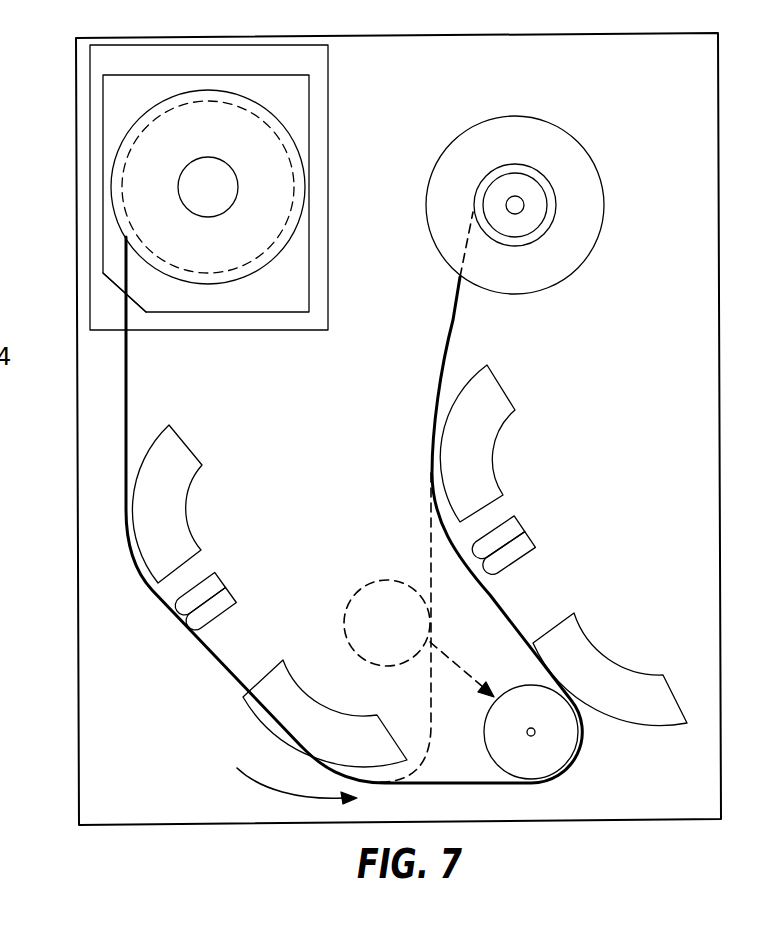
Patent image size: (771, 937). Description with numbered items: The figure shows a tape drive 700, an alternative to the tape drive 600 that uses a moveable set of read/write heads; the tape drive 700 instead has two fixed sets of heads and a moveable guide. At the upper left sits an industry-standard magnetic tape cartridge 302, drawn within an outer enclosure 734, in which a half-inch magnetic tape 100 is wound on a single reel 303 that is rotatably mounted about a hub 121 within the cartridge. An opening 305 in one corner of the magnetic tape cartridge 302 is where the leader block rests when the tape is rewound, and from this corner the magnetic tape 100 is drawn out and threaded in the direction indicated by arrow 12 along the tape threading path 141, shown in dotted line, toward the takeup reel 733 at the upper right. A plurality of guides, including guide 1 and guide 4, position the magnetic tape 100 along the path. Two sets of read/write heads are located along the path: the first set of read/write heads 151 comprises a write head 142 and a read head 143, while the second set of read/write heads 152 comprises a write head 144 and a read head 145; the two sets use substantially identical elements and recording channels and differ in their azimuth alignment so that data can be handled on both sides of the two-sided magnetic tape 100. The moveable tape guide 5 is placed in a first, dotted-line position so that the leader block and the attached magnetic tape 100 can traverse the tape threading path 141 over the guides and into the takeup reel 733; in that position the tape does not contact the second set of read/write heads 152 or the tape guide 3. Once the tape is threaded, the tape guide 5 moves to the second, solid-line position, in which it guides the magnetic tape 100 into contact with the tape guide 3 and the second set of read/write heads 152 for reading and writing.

The tape drive 700 is at (718, 393).
The cassette housing 734 is at (328, 67).
The magnetic tape cartridge 302 is at (133, 75).
The opening 305 is at (113, 285).
The reel 303 is at (122, 140).
The reel hub 121 is at (234, 170).
The take-up reel 733 is at (585, 180).
The magnetic tape 100 is at (128, 358).
The guide 1 is at (178, 460).
The first set of read/write heads 151 is at (163, 619).
The write head 142 is at (170, 618).
The read head 143 is at (182, 635).
The guide 4 is at (468, 407).
The second set of read/write heads 152 is at (513, 534).
The read head 145 is at (518, 527).
The write head 144 is at (527, 541).
The tape threading path 141 is at (430, 684).
The tape guide 3 is at (627, 712).
The moveable tape guide 5 is at (537, 760).
The arrow 12 is at (280, 797).
The tape drive 600 is at (0, 511).